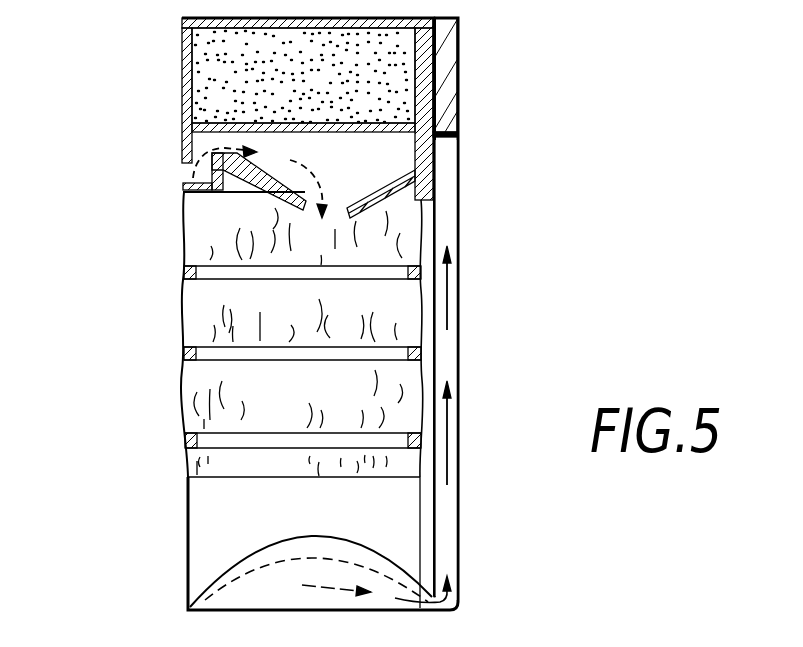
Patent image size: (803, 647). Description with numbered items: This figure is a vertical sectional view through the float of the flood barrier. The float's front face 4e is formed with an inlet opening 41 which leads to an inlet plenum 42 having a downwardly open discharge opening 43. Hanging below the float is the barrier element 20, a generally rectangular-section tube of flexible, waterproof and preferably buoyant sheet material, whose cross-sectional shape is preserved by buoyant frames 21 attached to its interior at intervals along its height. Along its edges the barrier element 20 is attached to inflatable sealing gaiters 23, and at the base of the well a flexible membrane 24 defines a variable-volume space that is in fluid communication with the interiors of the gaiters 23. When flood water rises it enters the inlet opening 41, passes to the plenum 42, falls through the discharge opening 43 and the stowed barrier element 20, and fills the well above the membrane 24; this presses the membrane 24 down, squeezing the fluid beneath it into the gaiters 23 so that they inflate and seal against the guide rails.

The front face 4e is at (182, 88).
The inlet opening 41 is at (182, 172).
The inlet plenum 42 is at (370, 164).
The discharge opening 43 is at (332, 215).
The frames 21 is at (243, 275).
The barrier element 20 is at (183, 398).
The inflatable sealing gaiters 23 is at (460, 467).
The flexible membrane 24 is at (305, 540).